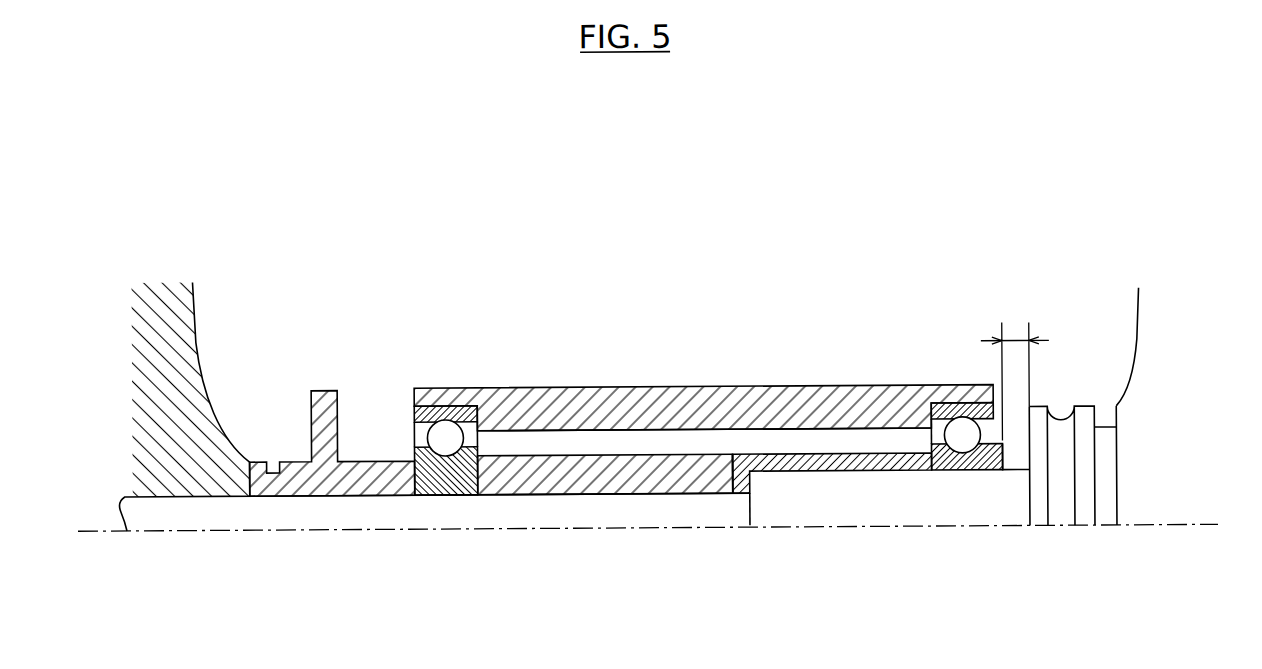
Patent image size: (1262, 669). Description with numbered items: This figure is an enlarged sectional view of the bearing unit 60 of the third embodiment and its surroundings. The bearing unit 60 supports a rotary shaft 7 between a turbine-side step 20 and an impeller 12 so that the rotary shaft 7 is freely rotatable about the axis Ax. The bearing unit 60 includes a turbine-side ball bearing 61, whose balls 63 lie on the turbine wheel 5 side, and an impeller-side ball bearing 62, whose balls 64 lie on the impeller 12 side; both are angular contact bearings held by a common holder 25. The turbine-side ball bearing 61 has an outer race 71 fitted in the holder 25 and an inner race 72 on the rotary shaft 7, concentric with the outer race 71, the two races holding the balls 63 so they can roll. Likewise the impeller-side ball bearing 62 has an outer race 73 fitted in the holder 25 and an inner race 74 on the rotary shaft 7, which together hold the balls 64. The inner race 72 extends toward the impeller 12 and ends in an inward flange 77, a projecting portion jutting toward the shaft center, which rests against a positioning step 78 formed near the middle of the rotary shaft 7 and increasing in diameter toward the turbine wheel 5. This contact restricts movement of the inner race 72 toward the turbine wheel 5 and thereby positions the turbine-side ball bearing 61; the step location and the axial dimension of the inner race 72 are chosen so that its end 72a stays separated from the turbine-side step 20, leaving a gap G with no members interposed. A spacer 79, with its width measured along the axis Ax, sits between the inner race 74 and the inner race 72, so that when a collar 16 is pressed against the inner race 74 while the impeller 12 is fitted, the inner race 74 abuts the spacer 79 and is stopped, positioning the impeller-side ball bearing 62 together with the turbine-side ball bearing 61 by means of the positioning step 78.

The turbine wheel 5 is at (1130, 383).
The rotary shaft 7 is at (568, 507).
The impeller 12 is at (196, 299).
The collar 16 is at (297, 463).
The turbine-side step 20 is at (1028, 496).
The holder 25 is at (775, 391).
The bearing unit 60 is at (626, 280).
The turbine-side ball bearing 61 is at (964, 440).
The impeller-side ball bearing 62 is at (456, 440).
The balls 63 is at (950, 409).
The balls 64 is at (482, 449).
The outer race 71 is at (930, 392).
The inner race 72 is at (915, 476).
The end 72a is at (1003, 462).
The outer race 73 is at (427, 408).
The inner race 74 is at (438, 498).
The inward flange 77 is at (740, 497).
The positioning step 78 is at (748, 503).
The spacer 79 is at (628, 474).
The gap G is at (1015, 364).
The axis Ax is at (112, 533).